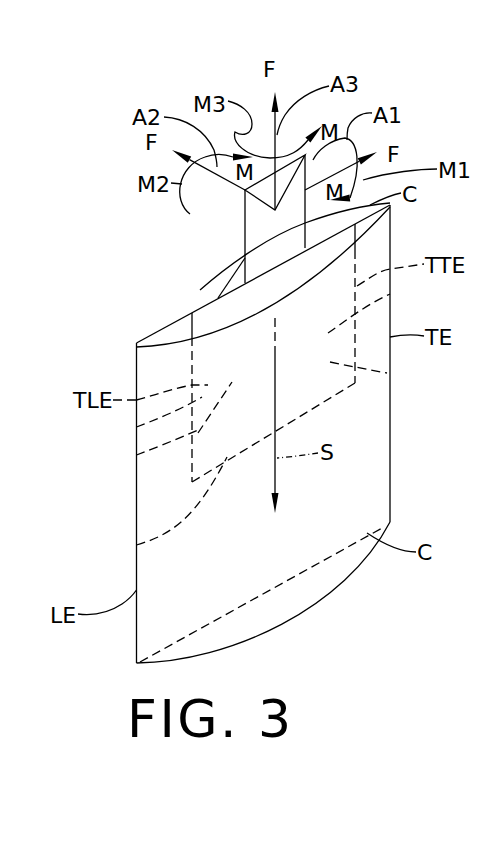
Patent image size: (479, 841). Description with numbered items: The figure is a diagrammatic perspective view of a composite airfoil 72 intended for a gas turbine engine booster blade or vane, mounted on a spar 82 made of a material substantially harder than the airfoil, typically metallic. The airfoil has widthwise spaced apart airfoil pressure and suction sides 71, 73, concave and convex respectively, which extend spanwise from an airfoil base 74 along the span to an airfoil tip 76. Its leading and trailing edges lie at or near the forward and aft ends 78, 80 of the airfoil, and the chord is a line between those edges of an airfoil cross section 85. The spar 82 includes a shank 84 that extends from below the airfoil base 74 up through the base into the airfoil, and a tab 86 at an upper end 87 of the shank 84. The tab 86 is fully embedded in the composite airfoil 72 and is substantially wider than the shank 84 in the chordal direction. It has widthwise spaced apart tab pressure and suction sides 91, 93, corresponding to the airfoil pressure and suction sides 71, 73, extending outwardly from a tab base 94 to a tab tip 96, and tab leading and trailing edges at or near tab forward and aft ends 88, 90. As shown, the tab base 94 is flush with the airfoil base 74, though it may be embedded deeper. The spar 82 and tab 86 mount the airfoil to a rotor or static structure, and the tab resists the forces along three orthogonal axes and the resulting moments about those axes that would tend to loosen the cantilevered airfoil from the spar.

The airfoil pressure side 71 is at (370, 408).
The composite airfoil 72 is at (361, 609).
The airfoil suction side 73 is at (168, 325).
The airfoil base 74 is at (155, 327).
The airfoil tip 76 is at (271, 628).
The forward end 78 is at (147, 504).
The aft end 80 is at (378, 258).
The spar 82 is at (245, 230).
The shank 84 is at (272, 240).
The airfoil cross section 85 is at (222, 292).
The tab 86 is at (390, 294).
The upper end of the shank 87 is at (280, 258).
The tab forward end 88 is at (137, 425).
The tab aft end 90 is at (387, 373).
The tab pressure side 91 is at (137, 453).
The tab suction side 93 is at (215, 300).
The tab base 94 is at (228, 278).
The tab tip 96 is at (137, 545).